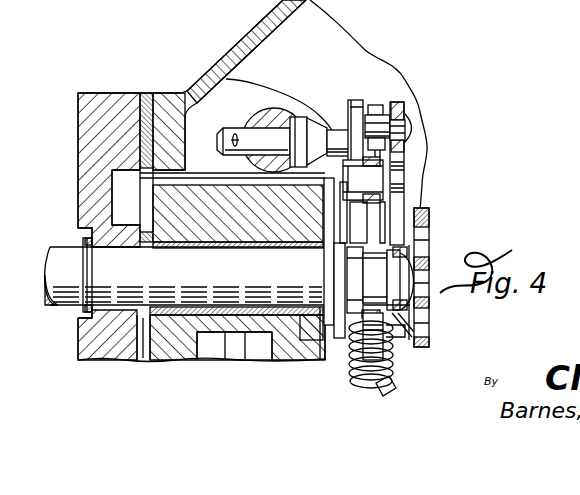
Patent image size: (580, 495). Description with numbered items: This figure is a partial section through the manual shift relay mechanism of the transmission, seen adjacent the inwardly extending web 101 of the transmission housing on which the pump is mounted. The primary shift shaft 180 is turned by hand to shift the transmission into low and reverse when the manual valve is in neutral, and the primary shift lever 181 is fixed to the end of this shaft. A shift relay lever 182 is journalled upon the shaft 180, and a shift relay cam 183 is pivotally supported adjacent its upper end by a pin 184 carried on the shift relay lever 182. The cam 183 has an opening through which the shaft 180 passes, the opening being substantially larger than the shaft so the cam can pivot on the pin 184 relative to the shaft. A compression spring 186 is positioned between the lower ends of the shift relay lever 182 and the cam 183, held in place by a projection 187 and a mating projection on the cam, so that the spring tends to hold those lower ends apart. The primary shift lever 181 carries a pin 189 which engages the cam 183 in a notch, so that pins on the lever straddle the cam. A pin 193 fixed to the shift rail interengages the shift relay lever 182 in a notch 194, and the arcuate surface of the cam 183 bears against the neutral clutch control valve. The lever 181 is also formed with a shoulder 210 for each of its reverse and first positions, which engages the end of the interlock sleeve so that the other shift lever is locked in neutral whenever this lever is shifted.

The inwardly extending web 101 is at (236, 47).
The primary shift shaft 180 is at (190, 293).
The primary shift lever 181 is at (405, 102).
The shift relay lever 182 is at (357, 214).
The shift relay cam 183 is at (375, 104).
The pin 184 is at (383, 177).
The compression spring 186 is at (352, 374).
The projection 187 is at (385, 395).
The pin 189 is at (402, 130).
The pin 193 is at (274, 138).
The notch 194 is at (352, 116).
The shoulder 210 is at (430, 232).